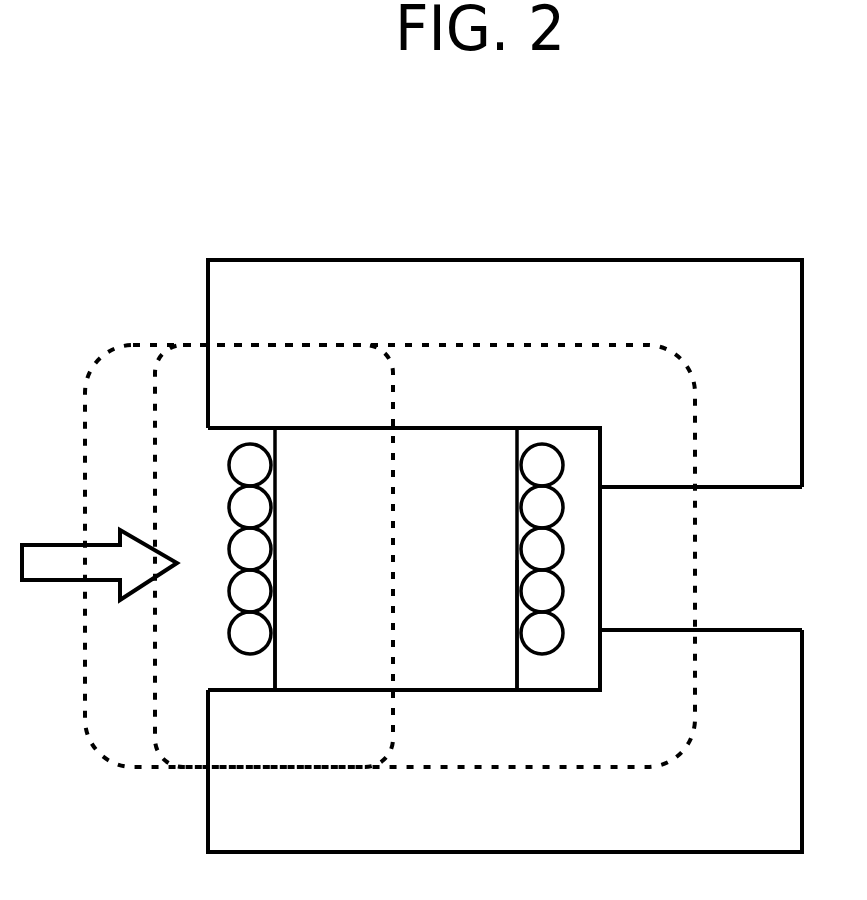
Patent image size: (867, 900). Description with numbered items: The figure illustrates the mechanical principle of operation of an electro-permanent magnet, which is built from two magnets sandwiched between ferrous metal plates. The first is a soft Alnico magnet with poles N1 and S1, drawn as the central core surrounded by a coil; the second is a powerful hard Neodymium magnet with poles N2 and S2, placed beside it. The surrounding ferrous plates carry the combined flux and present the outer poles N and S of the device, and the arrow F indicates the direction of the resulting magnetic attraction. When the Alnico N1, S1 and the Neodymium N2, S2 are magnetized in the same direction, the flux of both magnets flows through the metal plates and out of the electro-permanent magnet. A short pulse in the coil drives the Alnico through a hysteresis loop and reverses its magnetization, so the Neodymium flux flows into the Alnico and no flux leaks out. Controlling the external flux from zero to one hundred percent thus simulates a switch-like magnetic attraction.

The north pole of yoke N is at (505, 373).
The south pole of yoke S is at (505, 744).
The Alnico soft magnet north pole N1 is at (396, 559).
The Alnico soft magnet south pole S1 is at (396, 625).
The Neodymium hard magnet north pole N2 is at (701, 523).
The Neodymium hard magnet south pole S2 is at (701, 595).
The force direction arrow F is at (114, 560).